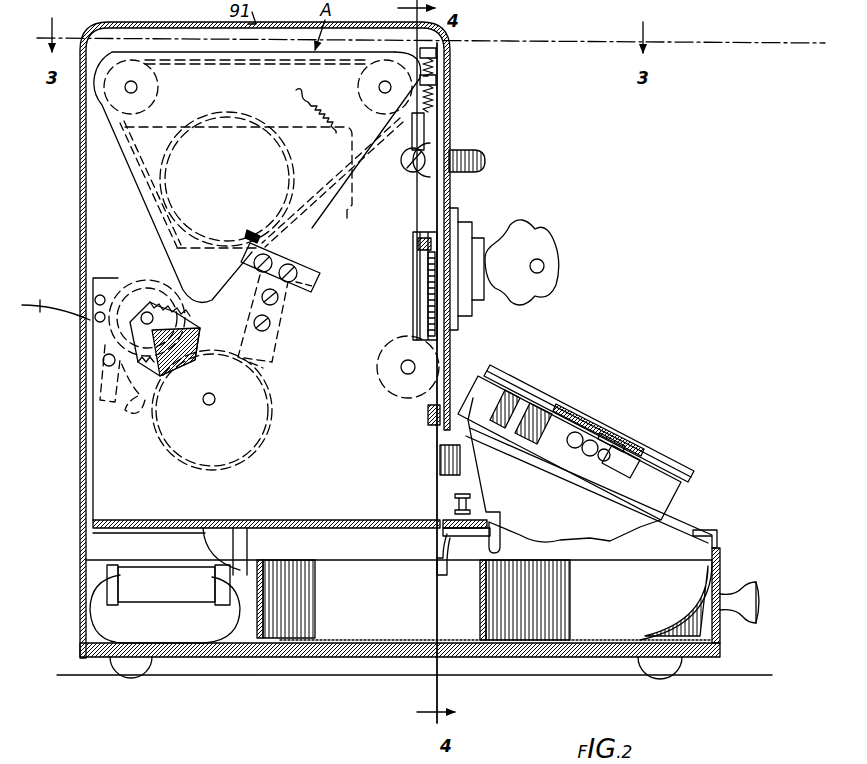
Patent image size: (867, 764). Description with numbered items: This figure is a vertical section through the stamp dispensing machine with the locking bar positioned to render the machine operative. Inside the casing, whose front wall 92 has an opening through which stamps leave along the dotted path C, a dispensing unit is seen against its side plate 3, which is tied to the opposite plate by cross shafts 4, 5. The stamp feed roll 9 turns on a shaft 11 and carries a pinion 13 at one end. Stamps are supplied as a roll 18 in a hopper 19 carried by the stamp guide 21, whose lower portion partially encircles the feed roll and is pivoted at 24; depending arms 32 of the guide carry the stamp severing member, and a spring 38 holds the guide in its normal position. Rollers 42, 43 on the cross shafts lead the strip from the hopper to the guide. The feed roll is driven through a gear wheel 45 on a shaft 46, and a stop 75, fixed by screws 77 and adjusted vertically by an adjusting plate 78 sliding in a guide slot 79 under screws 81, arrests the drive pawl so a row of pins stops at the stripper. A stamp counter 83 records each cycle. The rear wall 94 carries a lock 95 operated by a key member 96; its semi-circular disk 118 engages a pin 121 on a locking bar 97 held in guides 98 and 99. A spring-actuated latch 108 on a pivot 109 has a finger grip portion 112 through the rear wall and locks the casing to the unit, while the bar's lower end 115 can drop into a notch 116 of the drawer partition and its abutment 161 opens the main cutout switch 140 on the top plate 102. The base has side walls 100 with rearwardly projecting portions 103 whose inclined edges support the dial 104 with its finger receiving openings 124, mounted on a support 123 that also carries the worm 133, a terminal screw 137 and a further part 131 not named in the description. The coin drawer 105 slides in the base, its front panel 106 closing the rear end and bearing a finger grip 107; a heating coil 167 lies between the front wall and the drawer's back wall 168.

The side plate 3 is at (118, 432).
The cross shaft 4 is at (384, 88).
The cross shaft 5 is at (130, 88).
The stamp feed roll 9 is at (137, 280).
The shaft 11 is at (146, 316).
The pinion 13 is at (140, 336).
The roll 18 is at (232, 112).
The hopper 19 is at (291, 127).
The stamp guide 21 is at (137, 178).
The pivot 24 is at (103, 360).
The depending arms 32 is at (100, 398).
The spring 38 is at (296, 91).
The roller 42 is at (361, 100).
The roller 43 is at (158, 84).
The gear wheel 45 is at (145, 372).
The shaft 46 is at (206, 401).
The stop 75 is at (262, 367).
The screws 77 is at (279, 298).
The adjusting plate 78 is at (312, 286).
The guide slot 79 is at (320, 270).
The screws 81 is at (283, 274).
The stamp counter 83 is at (394, 396).
The front wall 92 is at (80, 148).
The rear wall 94 is at (449, 135).
The lock 95 is at (413, 267).
The key member 96 is at (557, 262).
The locking bar 97 is at (436, 206).
The guide 98 is at (440, 80).
The guide screw 99 is at (430, 424).
The side walls 100 is at (110, 549).
The top plate 102 is at (305, 520).
The rearwardly projecting portions 103 is at (703, 534).
The dial 104 is at (668, 438).
The coin drawer 105 is at (557, 568).
The front panel 106 is at (722, 566).
The finger grip 107 is at (742, 601).
The latch 108 is at (420, 135).
The pivot 109 is at (412, 170).
The finger grip portion 112 is at (480, 160).
The lower end of locking bar 115 is at (443, 533).
The notch 116 is at (437, 568).
The semi-circular disk 118 is at (428, 312).
The pin 121 is at (418, 243).
The support 123 is at (672, 497).
The finger receiving openings 124 is at (520, 377).
The lens assembly 131 is at (552, 490).
The worm 133 is at (612, 442).
The terminal screw 137 is at (298, 751).
The main cutout switch 140 is at (452, 505).
The abutment 161 is at (440, 466).
The heating coil 167 is at (163, 576).
The back wall 168 is at (282, 594).
The stamp ejection path C is at (56, 300).